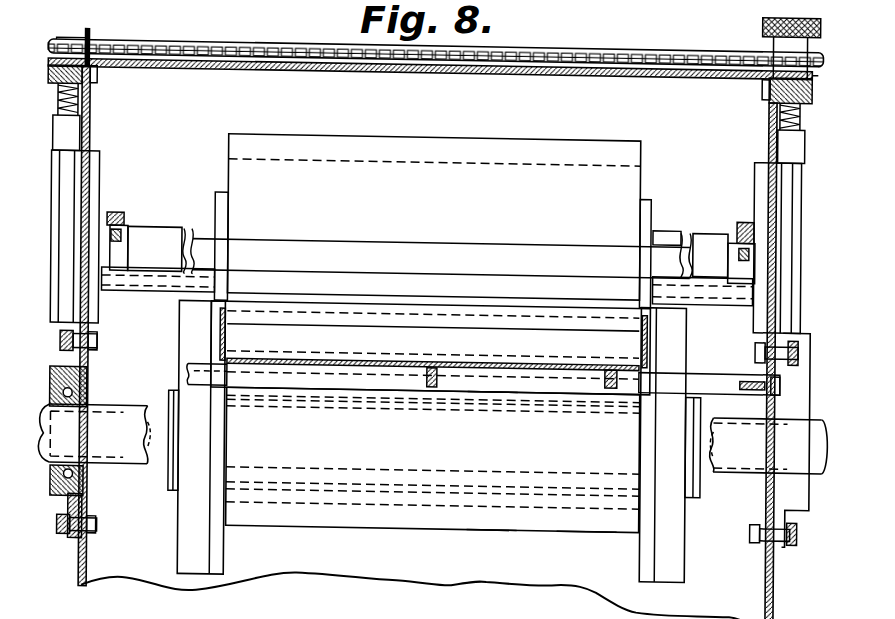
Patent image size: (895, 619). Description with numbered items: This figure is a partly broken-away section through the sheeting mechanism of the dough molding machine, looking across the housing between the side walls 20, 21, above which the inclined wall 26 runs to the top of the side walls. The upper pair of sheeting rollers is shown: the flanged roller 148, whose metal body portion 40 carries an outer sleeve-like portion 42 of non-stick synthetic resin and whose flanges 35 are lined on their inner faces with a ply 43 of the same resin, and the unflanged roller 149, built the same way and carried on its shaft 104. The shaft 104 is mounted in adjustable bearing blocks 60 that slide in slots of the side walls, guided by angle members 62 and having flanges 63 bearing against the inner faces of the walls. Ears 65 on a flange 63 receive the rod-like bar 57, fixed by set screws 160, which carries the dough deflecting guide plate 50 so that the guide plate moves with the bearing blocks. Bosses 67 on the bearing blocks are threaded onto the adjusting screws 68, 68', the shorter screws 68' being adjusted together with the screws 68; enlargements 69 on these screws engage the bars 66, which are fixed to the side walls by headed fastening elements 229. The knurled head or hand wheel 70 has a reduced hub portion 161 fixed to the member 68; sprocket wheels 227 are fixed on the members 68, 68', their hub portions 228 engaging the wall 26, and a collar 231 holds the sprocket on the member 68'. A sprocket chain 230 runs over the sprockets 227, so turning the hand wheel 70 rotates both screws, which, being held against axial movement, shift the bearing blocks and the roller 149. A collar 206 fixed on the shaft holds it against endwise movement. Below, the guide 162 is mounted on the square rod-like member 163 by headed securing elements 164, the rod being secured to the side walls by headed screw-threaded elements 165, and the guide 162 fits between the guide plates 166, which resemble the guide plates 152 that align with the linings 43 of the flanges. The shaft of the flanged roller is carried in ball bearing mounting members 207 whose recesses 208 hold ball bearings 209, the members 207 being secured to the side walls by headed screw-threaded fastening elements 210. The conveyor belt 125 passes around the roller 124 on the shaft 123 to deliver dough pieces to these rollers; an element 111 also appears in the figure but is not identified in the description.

The side wall 20 is at (81, 567).
The side wall 21 is at (773, 137).
The inclined wall portion 26 is at (567, 69).
The flanges 35 is at (191, 550).
The metal body portion 40 is at (418, 500).
The outer tubular sleeve-like portion 42 is at (591, 513).
The ply of synthetic resin 43 is at (221, 549).
The dough deflecting guide plate 50 is at (487, 315).
The rod-like member 57 is at (398, 247).
The adjustable bearing blocks 60 is at (59, 200).
The angle members 62 is at (71, 205).
The flanges 63 is at (90, 176).
The ears 65 is at (129, 239).
The bars 66 is at (90, 83).
The bosses 67 is at (75, 132).
The adjusting screw 68 is at (805, 147).
The adjusting screw 68' is at (96, 99).
The flanges 69 is at (800, 101).
The knurled head 70 is at (761, 12).
The shaft 104 is at (671, 229).
The drive shaft 111 is at (125, 454).
The shaft 123 is at (120, 409).
The roller 124 is at (172, 395).
The conveyor belt 125 is at (177, 391).
The flanged roller 148 is at (495, 517).
The unflanged roller 149 is at (517, 147).
The guide plates 152 is at (219, 194).
The set screws 160 is at (123, 214).
The reduced hub portions 161 is at (779, 32).
The guide 162 is at (334, 358).
The rod-like member 163 is at (494, 392).
The headed securing elements 164 is at (417, 383).
The headed screw-threaded elements 165 is at (769, 369).
The guide plates 166 is at (229, 334).
The collars 206 is at (749, 278).
The ball bearing mounting members 207 is at (56, 495).
The recesses 208 is at (88, 509).
The ball bearings 209 is at (89, 369).
The headed screw-threaded fastening elements 210 is at (99, 339).
The sprocket wheels 227 is at (54, 43).
The hub portions 228 is at (100, 39).
The headed fastening elements 229 is at (97, 72).
The sprocket chain 230 is at (257, 28).
The collar 231 is at (87, 30).